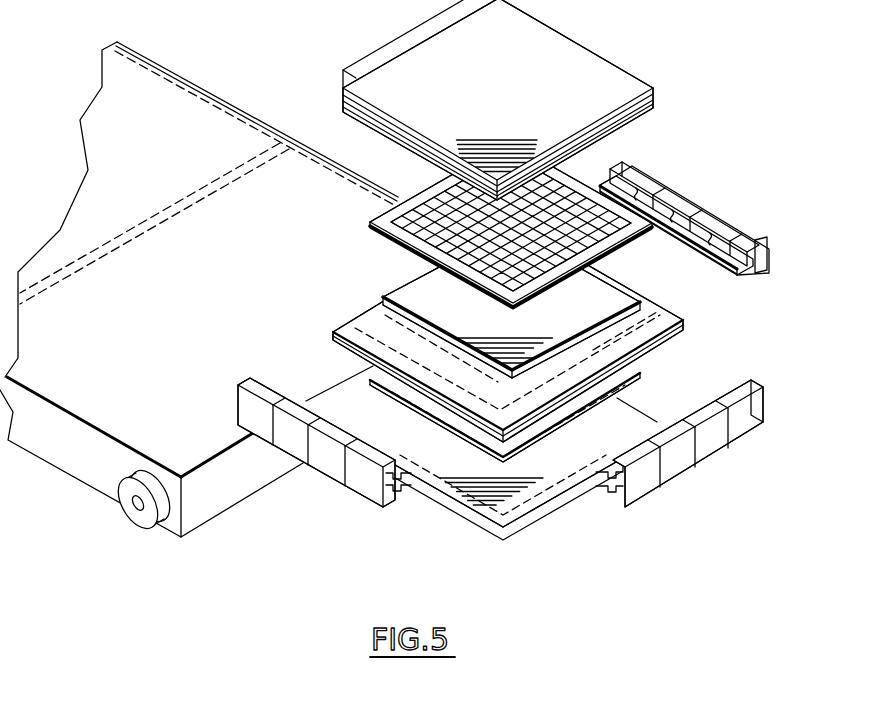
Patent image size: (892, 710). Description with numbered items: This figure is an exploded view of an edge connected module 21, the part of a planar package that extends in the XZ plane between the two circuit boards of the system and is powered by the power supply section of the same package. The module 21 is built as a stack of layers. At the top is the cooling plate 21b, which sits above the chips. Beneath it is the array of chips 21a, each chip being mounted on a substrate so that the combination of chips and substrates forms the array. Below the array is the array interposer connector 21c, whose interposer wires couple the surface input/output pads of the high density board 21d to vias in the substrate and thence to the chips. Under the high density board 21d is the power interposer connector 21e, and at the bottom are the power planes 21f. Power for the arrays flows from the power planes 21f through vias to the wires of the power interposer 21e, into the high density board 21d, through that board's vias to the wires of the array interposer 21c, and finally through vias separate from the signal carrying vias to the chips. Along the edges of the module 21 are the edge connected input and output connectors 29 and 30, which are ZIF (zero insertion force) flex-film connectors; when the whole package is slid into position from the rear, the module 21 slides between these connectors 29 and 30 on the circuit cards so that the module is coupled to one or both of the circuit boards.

The edge connected module 21 is at (556, 297).
The array of chips 21a is at (397, 243).
The cooling plate 21b is at (566, 25).
The array interposer connector 21c is at (513, 388).
The high density board 21d is at (692, 334).
The power interposer connector 21e is at (503, 472).
The power planes 21f is at (470, 522).
The edge connected input connector 29 is at (356, 496).
The edge connected output connector 30 is at (679, 178).